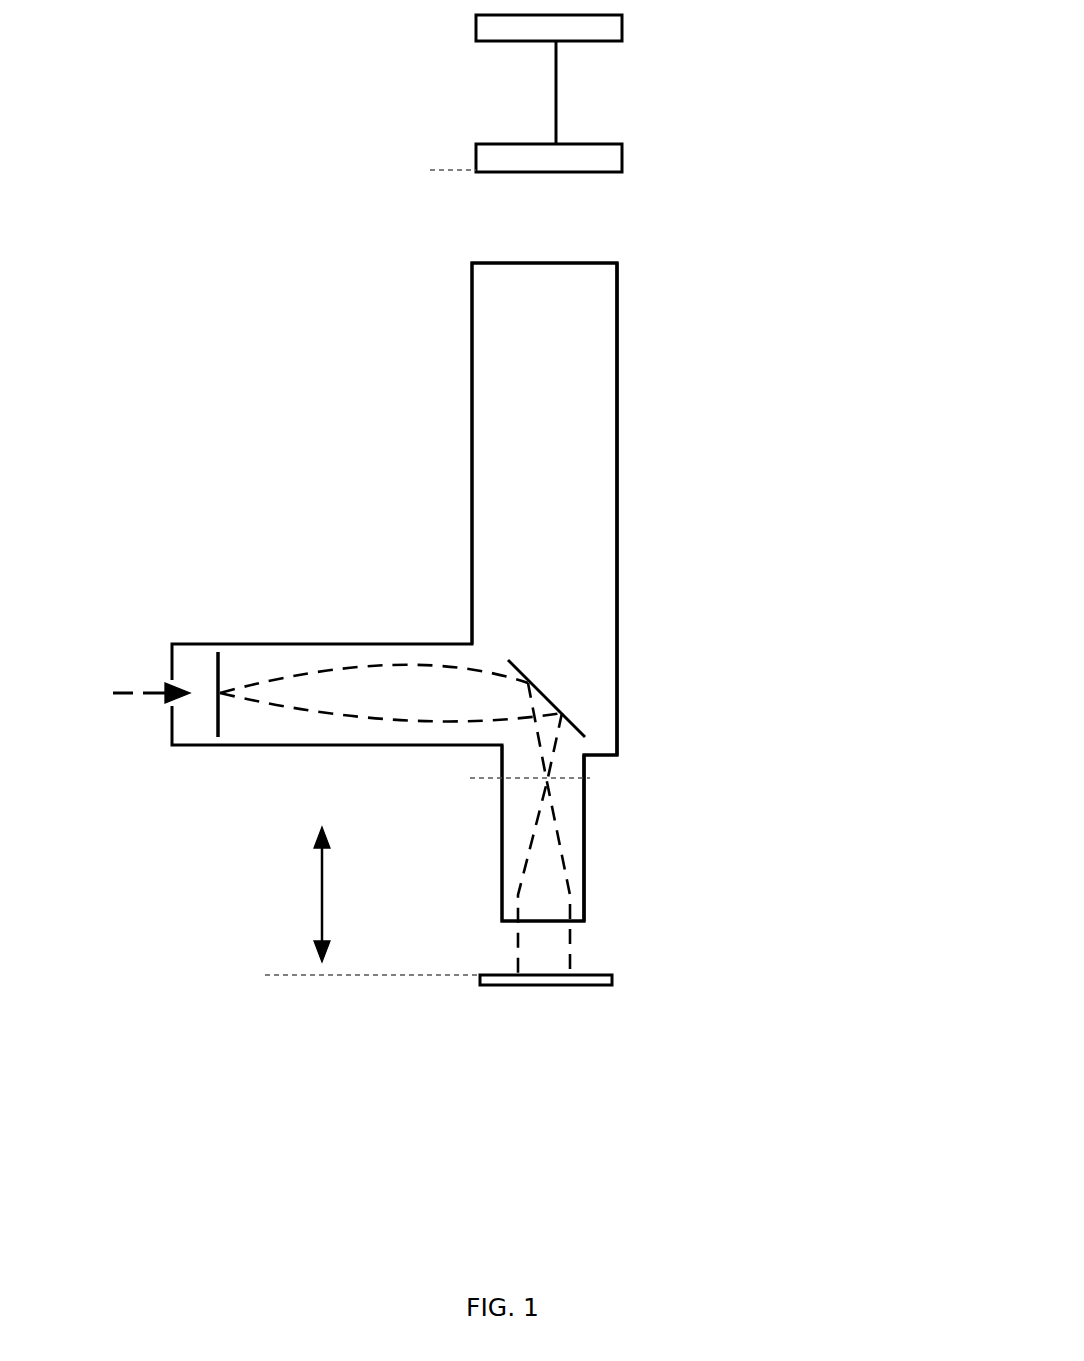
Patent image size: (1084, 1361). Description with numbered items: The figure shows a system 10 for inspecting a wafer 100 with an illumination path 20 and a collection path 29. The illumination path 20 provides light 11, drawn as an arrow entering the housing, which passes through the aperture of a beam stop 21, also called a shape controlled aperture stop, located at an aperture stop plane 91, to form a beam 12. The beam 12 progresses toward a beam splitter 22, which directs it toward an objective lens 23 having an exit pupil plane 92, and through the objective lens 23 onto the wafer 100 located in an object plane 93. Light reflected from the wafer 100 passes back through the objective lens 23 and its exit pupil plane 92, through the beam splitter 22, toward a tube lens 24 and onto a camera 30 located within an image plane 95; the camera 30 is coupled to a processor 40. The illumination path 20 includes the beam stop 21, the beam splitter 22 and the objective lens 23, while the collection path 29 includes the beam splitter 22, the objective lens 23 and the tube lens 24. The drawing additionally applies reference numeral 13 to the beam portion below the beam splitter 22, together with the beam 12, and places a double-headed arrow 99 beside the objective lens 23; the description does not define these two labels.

The system 10 is at (133, 1076).
The light 11 is at (123, 687).
The beam 12 is at (440, 718).
The focused light beam 13 is at (540, 832).
The illumination path 20 is at (237, 779).
The beam stop 21 is at (222, 667).
The beam splitter 22 is at (586, 735).
The objective lens 23 is at (588, 822).
The tube lens 24 is at (553, 447).
The collection path 29 is at (686, 753).
The camera 30 is at (623, 157).
The processor 40 is at (623, 25).
The aperture stop plane 91 is at (221, 648).
The exit pupil plane 92 is at (510, 776).
The object plane 93 is at (345, 983).
The image plane 95 is at (423, 163).
The displacement direction 99 is at (301, 894).
The wafer 100 is at (618, 980).